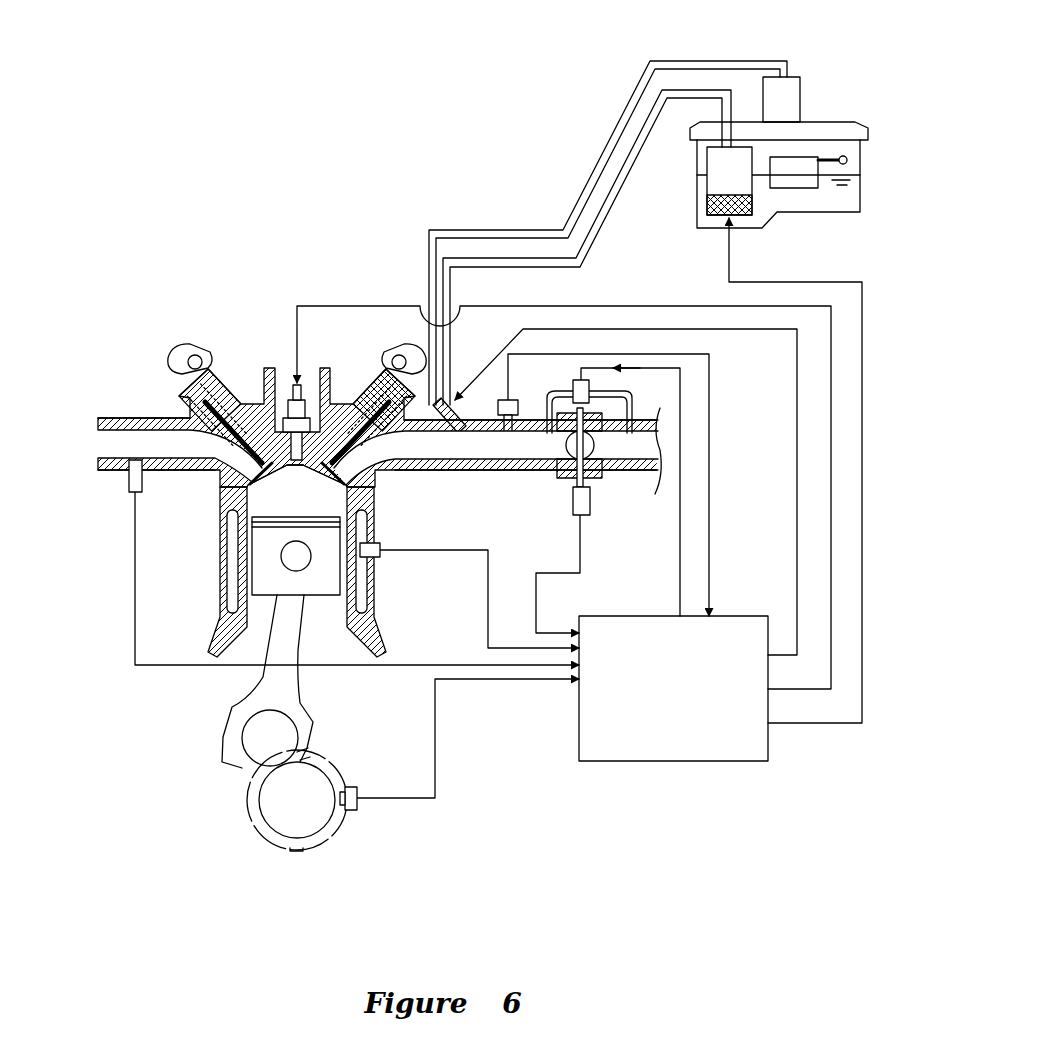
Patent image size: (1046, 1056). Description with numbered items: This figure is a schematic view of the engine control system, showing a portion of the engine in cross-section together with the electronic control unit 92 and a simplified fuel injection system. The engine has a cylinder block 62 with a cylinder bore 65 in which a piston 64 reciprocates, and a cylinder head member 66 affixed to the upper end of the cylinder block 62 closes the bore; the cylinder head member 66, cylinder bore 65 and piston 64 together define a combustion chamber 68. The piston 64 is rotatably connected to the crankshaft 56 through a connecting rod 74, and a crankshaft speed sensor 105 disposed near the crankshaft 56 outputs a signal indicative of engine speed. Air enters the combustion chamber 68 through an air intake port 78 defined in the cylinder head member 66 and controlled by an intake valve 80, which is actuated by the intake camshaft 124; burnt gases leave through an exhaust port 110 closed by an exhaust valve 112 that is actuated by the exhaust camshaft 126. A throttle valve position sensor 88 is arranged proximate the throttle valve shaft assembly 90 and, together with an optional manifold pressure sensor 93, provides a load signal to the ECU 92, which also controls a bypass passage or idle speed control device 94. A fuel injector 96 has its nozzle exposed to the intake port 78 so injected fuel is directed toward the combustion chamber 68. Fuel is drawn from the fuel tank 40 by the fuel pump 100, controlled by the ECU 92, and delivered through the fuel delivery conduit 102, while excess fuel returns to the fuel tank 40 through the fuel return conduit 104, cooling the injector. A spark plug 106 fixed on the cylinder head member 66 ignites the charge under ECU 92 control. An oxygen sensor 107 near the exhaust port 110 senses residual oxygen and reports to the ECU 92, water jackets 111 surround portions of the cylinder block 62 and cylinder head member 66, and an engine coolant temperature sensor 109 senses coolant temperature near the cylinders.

The fuel tank 40 is at (862, 192).
The fuel pump 100 is at (713, 187).
The fuel return conduit 104 is at (628, 108).
The fuel delivery conduit 102 is at (563, 265).
The fuel injector 96 is at (482, 393).
The manifold pressure sensor 93 is at (527, 395).
The idle speed control device 94 is at (603, 393).
The throttle valve shaft assembly 90 is at (597, 455).
The throttle valve position sensor 88 is at (573, 500).
The air intake port 78 is at (365, 466).
The cylinder head member 66 is at (253, 398).
The exhaust port 110 is at (117, 443).
The exhaust valve 112 is at (227, 455).
The oxygen sensor 107 is at (128, 478).
The spark plug 106 is at (300, 302).
The exhaust camshaft 126 is at (190, 350).
The intake valve 80 is at (325, 463).
The intake camshaft 124 is at (400, 345).
The cylinder bore 65 is at (265, 497).
The combustion chamber 68 is at (335, 495).
The piston 64 is at (265, 552).
The cylinder block 62 is at (220, 588).
The water jacket 111 is at (360, 598).
The engine coolant temperature sensor 109 is at (380, 560).
The connecting rod 74 is at (260, 650).
The crankshaft 56 is at (312, 778).
The crankshaft speed sensor 105 is at (355, 812).
The electronic control unit 92 is at (690, 745).